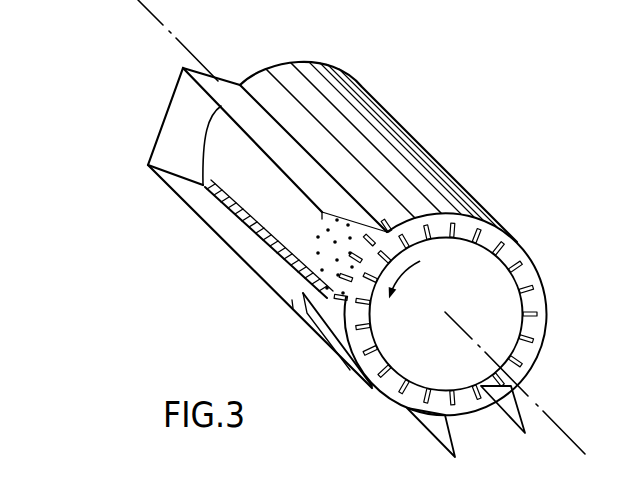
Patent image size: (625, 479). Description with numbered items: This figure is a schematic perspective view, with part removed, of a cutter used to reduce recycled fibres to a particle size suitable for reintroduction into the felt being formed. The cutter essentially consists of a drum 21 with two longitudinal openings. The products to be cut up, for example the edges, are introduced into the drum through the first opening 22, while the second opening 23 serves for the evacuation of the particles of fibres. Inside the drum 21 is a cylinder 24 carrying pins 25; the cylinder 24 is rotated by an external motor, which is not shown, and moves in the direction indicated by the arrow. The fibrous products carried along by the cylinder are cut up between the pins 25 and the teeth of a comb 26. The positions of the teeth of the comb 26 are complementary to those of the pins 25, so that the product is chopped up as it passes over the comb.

The drum 21 is at (307, 90).
The first opening 22 is at (155, 118).
The second opening 23 is at (466, 422).
The cylinder 24 is at (479, 304).
The pins 25 is at (362, 296).
The comb 26 is at (305, 312).